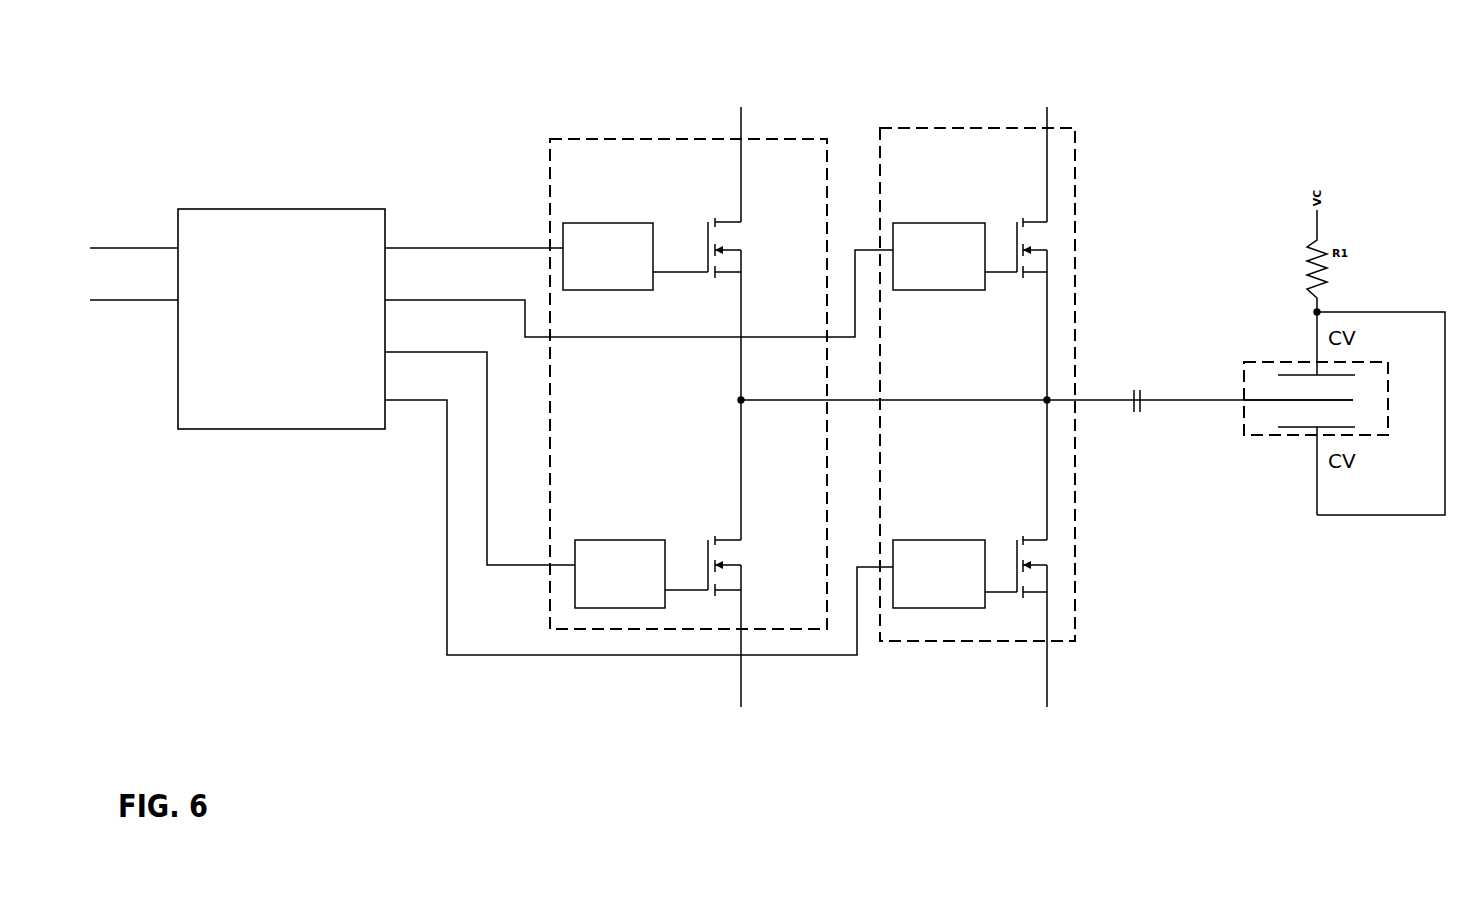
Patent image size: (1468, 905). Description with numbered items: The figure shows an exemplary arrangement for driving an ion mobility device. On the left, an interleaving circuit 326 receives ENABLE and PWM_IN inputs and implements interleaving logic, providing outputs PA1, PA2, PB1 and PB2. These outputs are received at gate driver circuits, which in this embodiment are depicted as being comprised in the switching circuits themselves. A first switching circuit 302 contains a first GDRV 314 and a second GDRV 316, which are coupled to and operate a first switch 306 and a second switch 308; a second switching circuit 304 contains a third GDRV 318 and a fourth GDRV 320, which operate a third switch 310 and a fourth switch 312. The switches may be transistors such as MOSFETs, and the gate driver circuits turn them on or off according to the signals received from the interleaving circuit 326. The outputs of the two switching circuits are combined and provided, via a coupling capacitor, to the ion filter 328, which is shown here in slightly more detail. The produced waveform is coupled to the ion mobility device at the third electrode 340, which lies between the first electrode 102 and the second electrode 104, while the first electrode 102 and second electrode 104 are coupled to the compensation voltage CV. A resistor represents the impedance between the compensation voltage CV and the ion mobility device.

The interleaving circuit 326 is at (318, 209).
The first switching circuit 302 is at (703, 139).
The second switching circuit 304 is at (1035, 128).
The first GDRV 314 is at (595, 220).
The second GDRV 316 is at (625, 545).
The third GDRV 318 is at (925, 218).
The fourth GDRV 320 is at (945, 537).
The first switch 306 is at (747, 258).
The second switch 308 is at (745, 573).
The third switch 310 is at (1052, 250).
The fourth switch 312 is at (1050, 565).
The ion filter 328 is at (1142, 388).
The first electrode 102 is at (1279, 375).
The second electrode 104 is at (1312, 425).
The third electrode 340 is at (1337, 402).